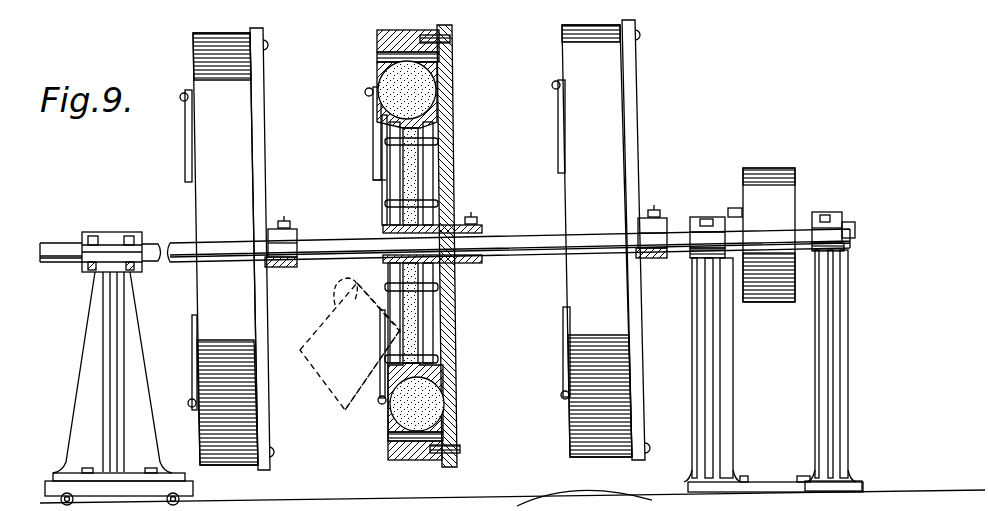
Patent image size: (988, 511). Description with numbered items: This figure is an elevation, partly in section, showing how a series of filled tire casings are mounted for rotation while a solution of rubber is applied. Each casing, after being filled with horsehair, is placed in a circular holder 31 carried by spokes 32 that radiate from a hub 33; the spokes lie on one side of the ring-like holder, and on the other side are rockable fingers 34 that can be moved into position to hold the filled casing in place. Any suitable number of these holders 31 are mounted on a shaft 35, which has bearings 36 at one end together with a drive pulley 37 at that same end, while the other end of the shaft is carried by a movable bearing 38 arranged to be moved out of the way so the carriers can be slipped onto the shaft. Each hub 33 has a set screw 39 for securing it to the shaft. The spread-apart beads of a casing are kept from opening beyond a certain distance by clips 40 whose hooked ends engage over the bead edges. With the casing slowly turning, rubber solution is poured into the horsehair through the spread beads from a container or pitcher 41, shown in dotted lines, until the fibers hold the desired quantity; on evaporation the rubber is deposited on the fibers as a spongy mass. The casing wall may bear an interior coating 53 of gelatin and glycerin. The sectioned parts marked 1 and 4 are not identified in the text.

The ball 1 is at (432, 104).
The guide posts 4 is at (380, 78).
The circular holder 31 is at (408, 478).
The spokes 32 is at (264, 153).
The hub 33 is at (283, 268).
The rockable fingers 34 is at (187, 142).
The shaft 35 is at (520, 240).
The bearings 36 is at (702, 217).
The drive pulley 37 is at (777, 302).
The movable bearing 38 is at (106, 236).
The set screw 39 is at (290, 220).
The clips 40 is at (398, 203).
The container or pitcher 41 is at (340, 400).
The interior coating 53 is at (392, 108).